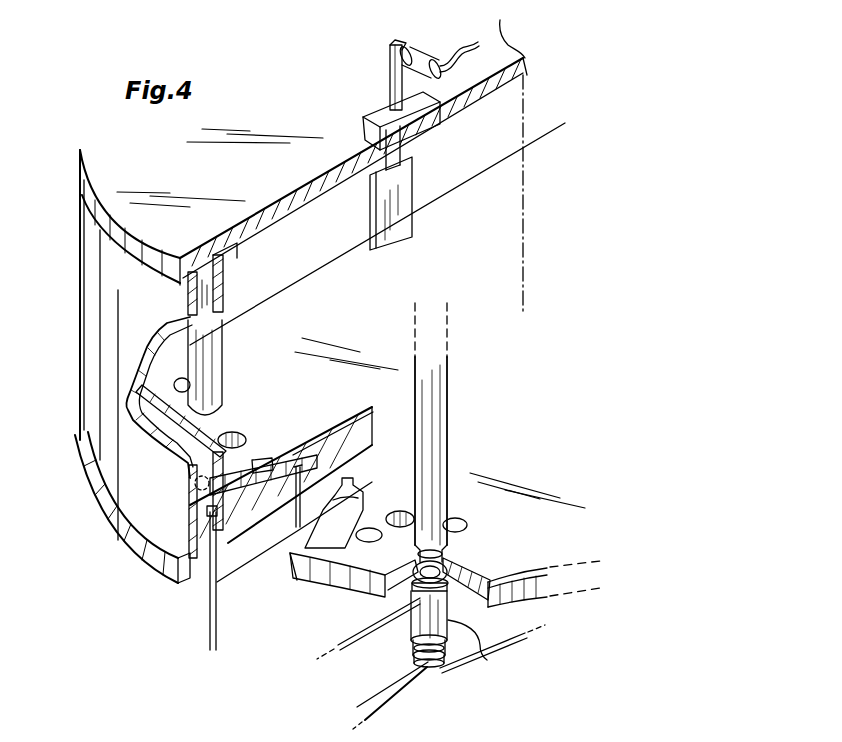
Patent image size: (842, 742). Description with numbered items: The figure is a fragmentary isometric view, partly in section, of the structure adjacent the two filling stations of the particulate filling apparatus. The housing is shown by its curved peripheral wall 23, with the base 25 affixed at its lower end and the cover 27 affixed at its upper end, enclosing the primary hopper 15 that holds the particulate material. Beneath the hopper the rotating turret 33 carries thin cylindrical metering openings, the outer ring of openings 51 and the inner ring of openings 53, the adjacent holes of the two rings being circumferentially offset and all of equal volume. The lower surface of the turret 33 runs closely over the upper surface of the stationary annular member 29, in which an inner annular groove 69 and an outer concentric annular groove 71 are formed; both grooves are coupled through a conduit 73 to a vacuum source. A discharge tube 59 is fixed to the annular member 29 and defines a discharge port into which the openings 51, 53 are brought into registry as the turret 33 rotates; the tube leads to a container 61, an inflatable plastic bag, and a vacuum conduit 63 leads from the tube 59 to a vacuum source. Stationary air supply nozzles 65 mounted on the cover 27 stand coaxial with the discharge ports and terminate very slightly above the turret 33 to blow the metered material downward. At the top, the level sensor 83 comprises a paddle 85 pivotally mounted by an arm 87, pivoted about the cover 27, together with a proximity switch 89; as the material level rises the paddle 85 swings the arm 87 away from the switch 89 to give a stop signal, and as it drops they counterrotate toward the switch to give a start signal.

The primary hopper 15 is at (145, 430).
The peripheral wall 23 is at (150, 350).
The base 25 is at (132, 543).
The cover 27 is at (290, 186).
The annular member 29 is at (572, 592).
The turret 33 is at (573, 540).
The openings 51 is at (443, 560).
The openings 53 is at (258, 460).
The discharge tube 59 is at (485, 660).
The container 61 is at (398, 683).
The vacuum conduit 63 is at (343, 644).
The air supply tube or nozzle 65 is at (213, 368).
The inner annular groove 69 is at (328, 447).
The outer annular groove 71 is at (207, 512).
The conduit 73 is at (210, 622).
The level sensor 83 is at (354, 103).
The paddle 85 is at (400, 188).
The arm 87 is at (390, 80).
The proximity switch 89 is at (424, 48).